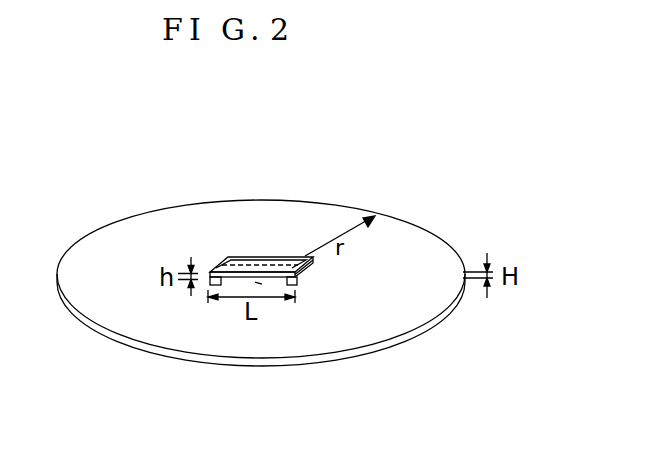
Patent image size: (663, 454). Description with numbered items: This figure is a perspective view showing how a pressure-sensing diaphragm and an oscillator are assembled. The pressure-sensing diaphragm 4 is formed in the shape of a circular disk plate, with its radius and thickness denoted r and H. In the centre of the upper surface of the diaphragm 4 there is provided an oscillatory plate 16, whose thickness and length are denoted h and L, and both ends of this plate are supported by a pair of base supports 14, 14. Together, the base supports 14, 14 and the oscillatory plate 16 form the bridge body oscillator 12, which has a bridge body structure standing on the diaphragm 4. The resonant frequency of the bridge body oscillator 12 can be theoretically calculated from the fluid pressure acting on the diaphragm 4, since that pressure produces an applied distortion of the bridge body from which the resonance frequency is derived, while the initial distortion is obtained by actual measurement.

The pressure-sensing diaphragm 4 is at (261, 298).
The bridge body oscillator 12 is at (290, 240).
The base supports 14 is at (208, 281).
The oscillatory plate 16 is at (259, 258).